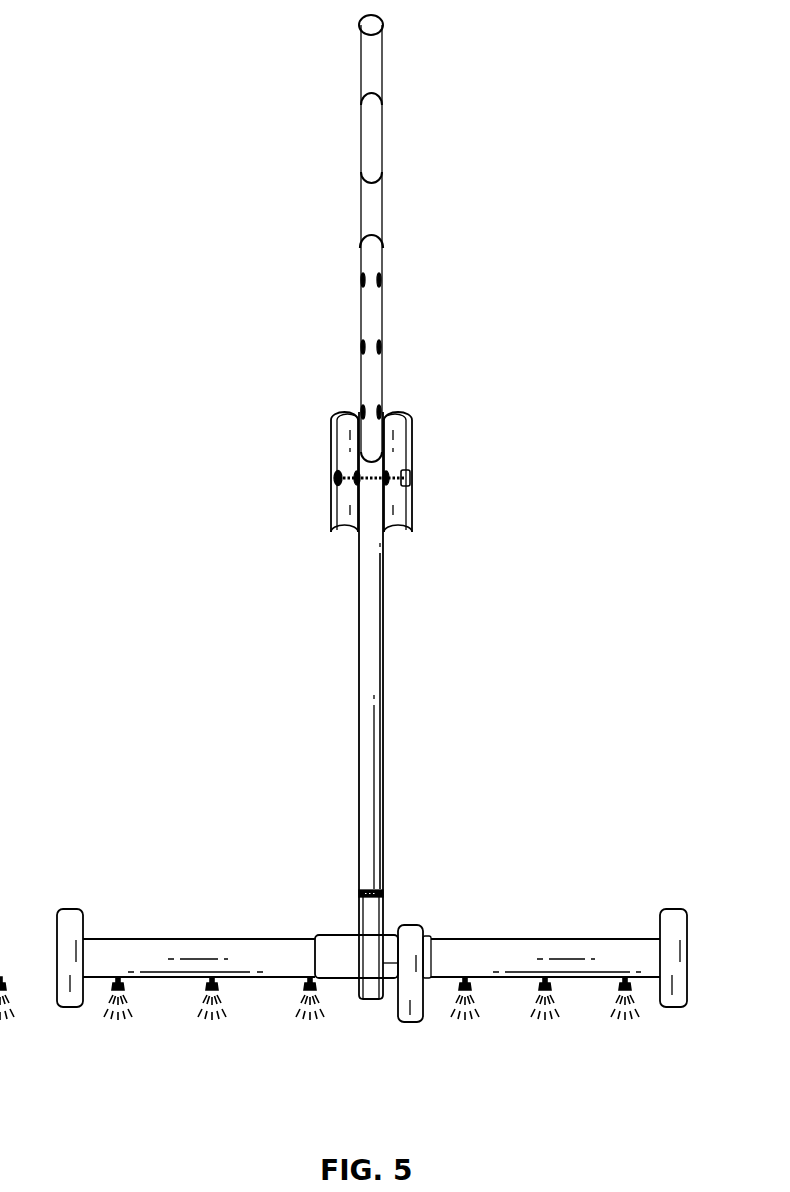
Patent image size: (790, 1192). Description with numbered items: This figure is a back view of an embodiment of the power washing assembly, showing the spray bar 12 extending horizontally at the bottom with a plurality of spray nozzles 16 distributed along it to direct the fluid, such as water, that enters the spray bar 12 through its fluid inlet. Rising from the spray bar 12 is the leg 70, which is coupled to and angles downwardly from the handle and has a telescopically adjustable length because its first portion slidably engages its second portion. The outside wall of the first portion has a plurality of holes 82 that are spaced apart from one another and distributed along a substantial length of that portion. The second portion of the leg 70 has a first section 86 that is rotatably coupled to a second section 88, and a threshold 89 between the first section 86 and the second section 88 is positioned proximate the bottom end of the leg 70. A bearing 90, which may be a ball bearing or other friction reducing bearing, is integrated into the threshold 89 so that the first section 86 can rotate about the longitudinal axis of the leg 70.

The spray bar 12 is at (195, 931).
The spray nozzles 16 is at (123, 985).
The leg 70 is at (358, 670).
The holes 82 is at (354, 410).
The first section 86 is at (368, 1004).
The second section 88 is at (389, 737).
The threshold 89 is at (355, 892).
The bearing 90 is at (372, 890).